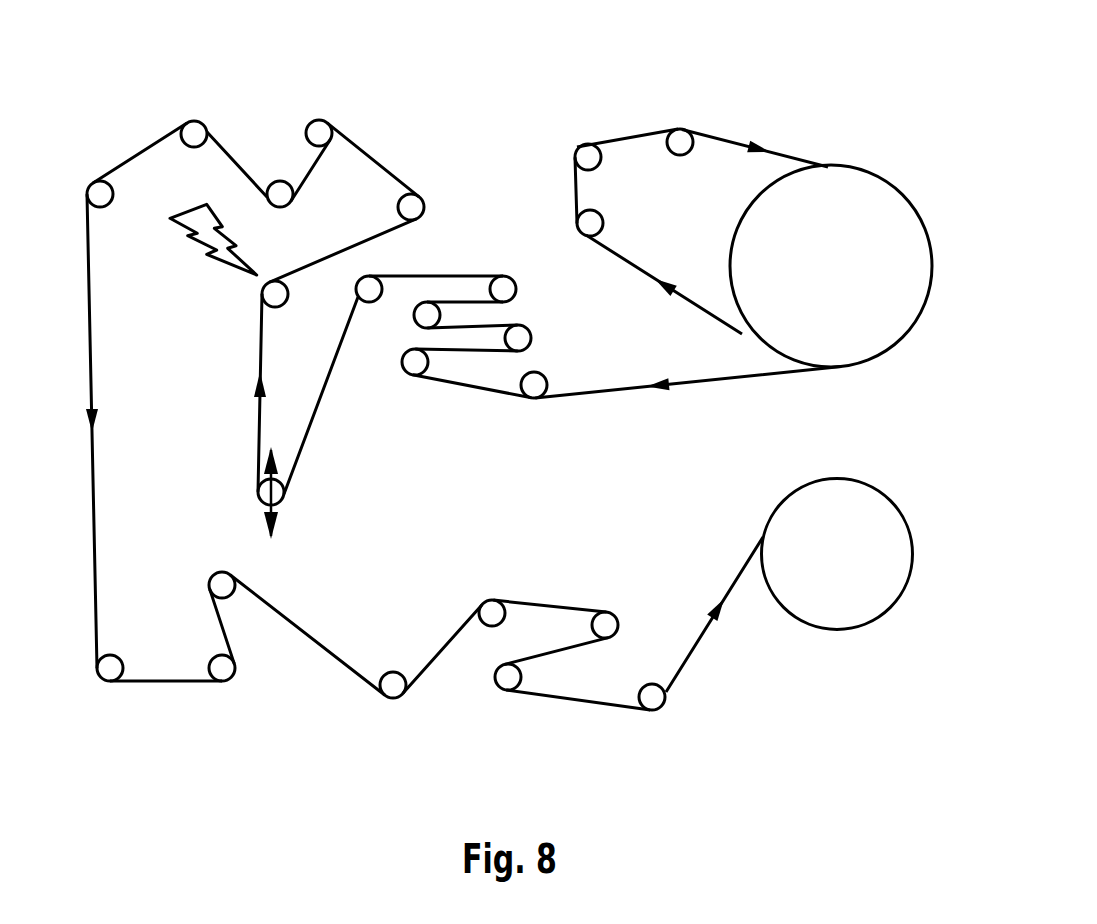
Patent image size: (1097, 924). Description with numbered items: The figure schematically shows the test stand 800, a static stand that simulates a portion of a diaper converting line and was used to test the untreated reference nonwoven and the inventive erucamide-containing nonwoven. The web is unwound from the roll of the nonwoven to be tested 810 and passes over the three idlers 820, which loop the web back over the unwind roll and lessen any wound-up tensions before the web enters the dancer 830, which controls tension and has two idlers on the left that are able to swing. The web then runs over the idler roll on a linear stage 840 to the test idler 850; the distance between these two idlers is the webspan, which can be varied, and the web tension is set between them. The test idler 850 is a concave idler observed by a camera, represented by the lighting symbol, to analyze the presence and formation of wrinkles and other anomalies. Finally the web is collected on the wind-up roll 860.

The test stand 800 is at (147, 758).
The roll of the nonwoven to be tested 810 is at (873, 337).
The idlers that loop the web back over the unwind roll 820 is at (618, 110).
The dancer 830 is at (467, 408).
The idler roll on a linear stage 840 is at (302, 506).
The test idler 850 is at (238, 296).
The wind-up roll 860 is at (835, 608).